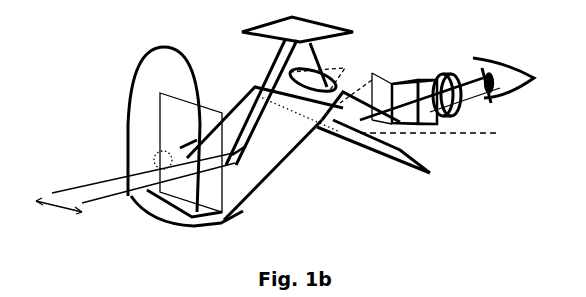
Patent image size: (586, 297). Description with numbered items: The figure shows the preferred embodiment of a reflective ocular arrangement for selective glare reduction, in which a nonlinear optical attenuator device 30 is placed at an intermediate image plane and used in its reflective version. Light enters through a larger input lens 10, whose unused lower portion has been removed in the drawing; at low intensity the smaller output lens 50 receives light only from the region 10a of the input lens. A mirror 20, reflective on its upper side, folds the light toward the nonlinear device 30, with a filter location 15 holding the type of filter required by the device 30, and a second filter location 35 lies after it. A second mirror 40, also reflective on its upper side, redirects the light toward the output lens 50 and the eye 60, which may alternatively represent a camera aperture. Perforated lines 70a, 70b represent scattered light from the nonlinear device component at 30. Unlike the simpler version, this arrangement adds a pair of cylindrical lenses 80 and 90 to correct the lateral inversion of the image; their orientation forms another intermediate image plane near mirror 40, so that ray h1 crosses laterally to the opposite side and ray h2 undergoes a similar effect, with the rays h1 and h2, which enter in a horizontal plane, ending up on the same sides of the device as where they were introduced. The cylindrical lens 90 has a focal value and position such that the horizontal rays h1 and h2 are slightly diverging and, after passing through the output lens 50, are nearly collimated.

The input lens 10 is at (160, 94).
The region of the input lens 10a is at (158, 154).
The filter location 15 is at (213, 193).
The mirror 20 is at (203, 152).
The nonlinear device 30 is at (289, 91).
The filter location 35 is at (422, 136).
The mirror 40 is at (327, 156).
The output lens 50 is at (440, 76).
The eye 60 is at (503, 80).
The perforated line 70a is at (373, 74).
The perforated line 70b is at (449, 143).
The cylindrical lens 80 is at (276, 105).
The cylindrical lens 90 is at (422, 130).
The ray h1 is at (506, 114).
The ray h2 is at (468, 86).